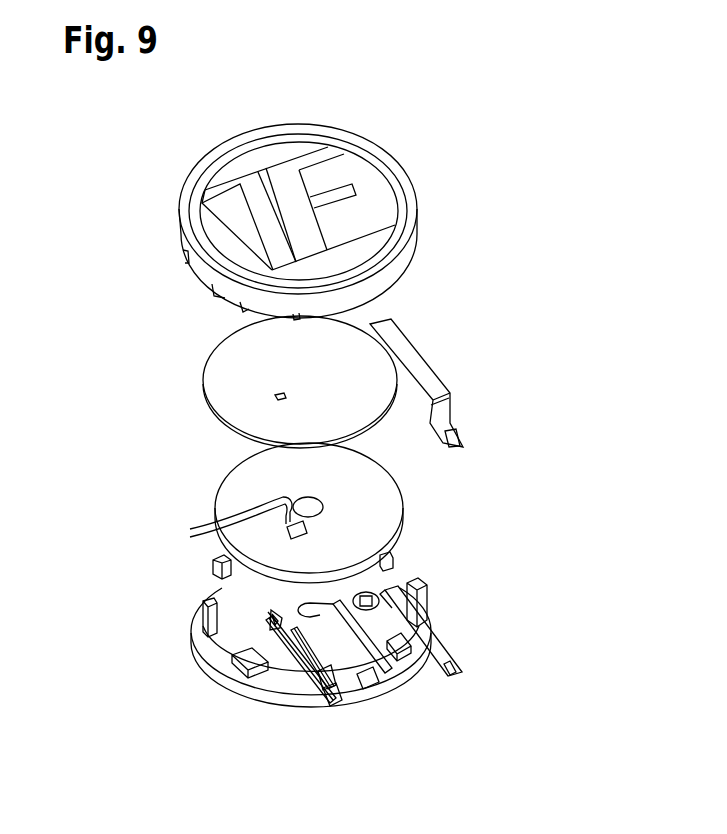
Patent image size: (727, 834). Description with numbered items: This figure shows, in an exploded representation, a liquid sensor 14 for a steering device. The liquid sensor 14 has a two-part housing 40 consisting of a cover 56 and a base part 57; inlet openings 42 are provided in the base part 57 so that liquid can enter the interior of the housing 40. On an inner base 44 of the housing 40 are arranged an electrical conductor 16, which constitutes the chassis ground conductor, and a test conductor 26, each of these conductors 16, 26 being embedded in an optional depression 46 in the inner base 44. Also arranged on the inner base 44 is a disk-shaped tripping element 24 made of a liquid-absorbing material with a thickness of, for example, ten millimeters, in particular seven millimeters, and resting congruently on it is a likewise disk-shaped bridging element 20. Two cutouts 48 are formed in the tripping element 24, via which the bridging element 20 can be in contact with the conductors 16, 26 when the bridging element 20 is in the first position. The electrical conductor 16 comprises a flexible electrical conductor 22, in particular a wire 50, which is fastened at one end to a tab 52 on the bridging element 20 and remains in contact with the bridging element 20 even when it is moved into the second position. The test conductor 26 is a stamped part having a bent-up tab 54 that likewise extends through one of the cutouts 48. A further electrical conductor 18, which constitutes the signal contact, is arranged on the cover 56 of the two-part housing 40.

The liquid sensor 14 is at (478, 146).
The electrical conductor 16 is at (302, 670).
The further electrical conductor 18 is at (423, 378).
The bridging element 20 is at (222, 366).
The flexible electrical conductor 22 is at (273, 617).
The tripping element 24 is at (380, 484).
The test conductor 26 is at (447, 648).
The housing 40 is at (432, 598).
The inlet openings 42 is at (195, 272).
The inner base 44 is at (233, 590).
The depression 46 is at (390, 672).
The cutouts 48 is at (190, 534).
The wire 50 is at (275, 619).
The tab 52 is at (280, 397).
The bent-up tab 54 is at (372, 595).
The cover 56 is at (355, 172).
The base part 57 is at (195, 613).